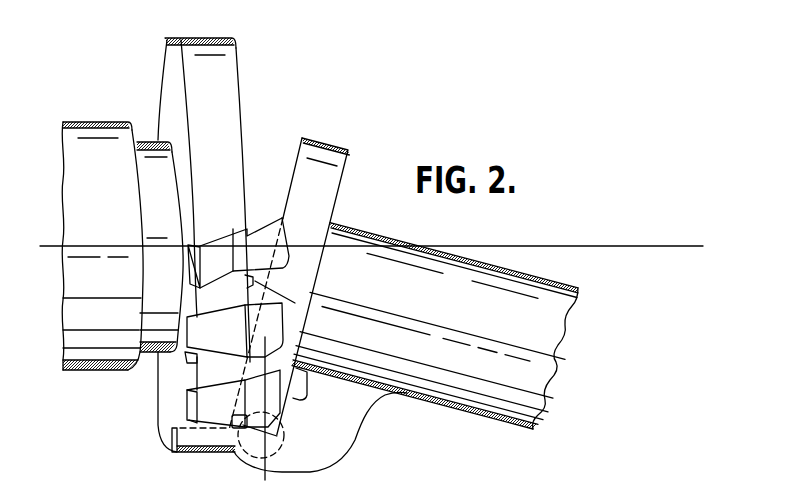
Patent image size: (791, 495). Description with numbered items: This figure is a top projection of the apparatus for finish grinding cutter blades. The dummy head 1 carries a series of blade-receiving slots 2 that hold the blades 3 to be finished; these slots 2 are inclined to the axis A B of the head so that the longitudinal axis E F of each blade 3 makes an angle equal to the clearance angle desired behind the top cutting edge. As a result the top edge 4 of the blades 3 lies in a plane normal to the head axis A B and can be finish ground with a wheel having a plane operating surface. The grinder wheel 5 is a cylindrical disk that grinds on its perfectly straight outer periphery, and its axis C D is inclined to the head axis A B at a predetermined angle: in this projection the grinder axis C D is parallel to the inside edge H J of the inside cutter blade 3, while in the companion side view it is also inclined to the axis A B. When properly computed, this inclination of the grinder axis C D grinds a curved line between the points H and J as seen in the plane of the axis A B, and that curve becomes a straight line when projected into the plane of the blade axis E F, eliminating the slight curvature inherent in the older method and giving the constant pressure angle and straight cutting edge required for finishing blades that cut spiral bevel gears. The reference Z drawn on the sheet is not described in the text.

The dummy head 1 is at (225, 110).
The blade-receiving slots 2 is at (182, 402).
The blades 3 is at (212, 333).
The top edge of the blades 4 is at (284, 324).
The grinder wheel 5 is at (320, 170).
The axis AB of the head A is at (212, 247).
The axis AB of the head B is at (559, 249).
The axis CD of the grinder wheel C is at (253, 281).
The axis CD of the grinder wheel D is at (555, 355).
The longitudinal axis EF of the blade E is at (188, 268).
The longitudinal axis EF of the blade F is at (292, 246).
The inside edge HJ of the inside cutter blade H is at (247, 427).
The inside edge HJ of the inside cutter blade J is at (268, 440).
The axis Z is at (261, 414).